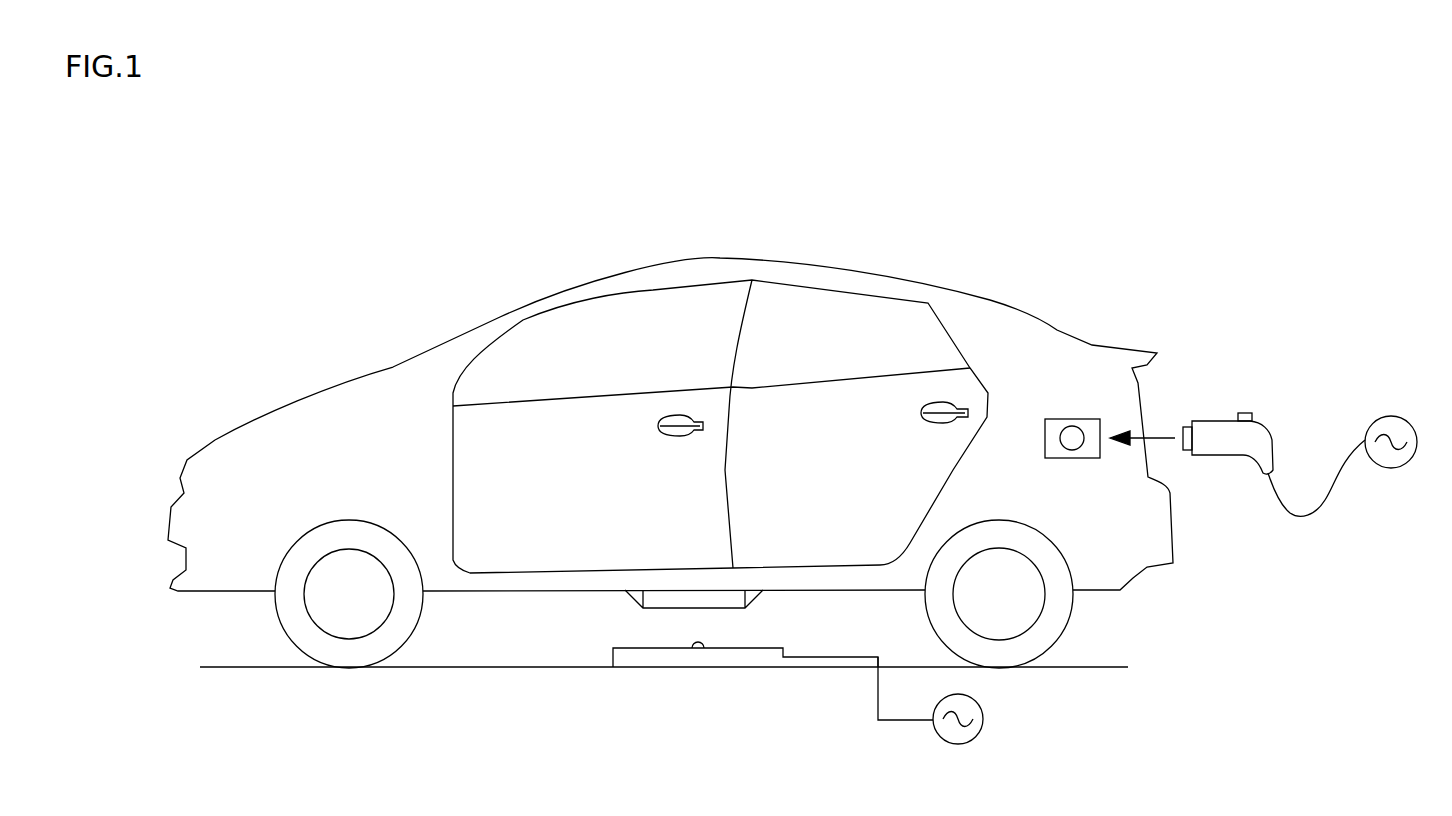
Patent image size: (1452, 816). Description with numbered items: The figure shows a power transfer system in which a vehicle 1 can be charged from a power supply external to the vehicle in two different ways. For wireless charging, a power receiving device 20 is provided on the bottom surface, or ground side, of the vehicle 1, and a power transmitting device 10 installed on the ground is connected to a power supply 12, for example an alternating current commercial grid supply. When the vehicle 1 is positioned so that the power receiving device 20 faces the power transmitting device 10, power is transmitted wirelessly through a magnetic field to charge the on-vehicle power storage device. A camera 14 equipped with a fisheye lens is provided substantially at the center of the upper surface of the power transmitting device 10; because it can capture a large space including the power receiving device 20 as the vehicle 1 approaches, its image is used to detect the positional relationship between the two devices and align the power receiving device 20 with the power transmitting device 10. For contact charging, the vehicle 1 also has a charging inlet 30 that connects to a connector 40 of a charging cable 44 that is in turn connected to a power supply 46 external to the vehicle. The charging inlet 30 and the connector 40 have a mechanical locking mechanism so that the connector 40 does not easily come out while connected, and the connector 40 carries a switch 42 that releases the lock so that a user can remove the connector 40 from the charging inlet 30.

The vehicle 1 is at (840, 230).
The power transmitting device 10 is at (693, 678).
The power supply 12 is at (983, 719).
The camera 14 is at (703, 645).
The power receiving device 20 is at (627, 608).
The charging inlet 30 is at (1072, 420).
The connector 40 is at (1205, 420).
The switch 42 is at (1242, 412).
The charging cable 44 is at (1310, 517).
The power supply 46 is at (1390, 418).